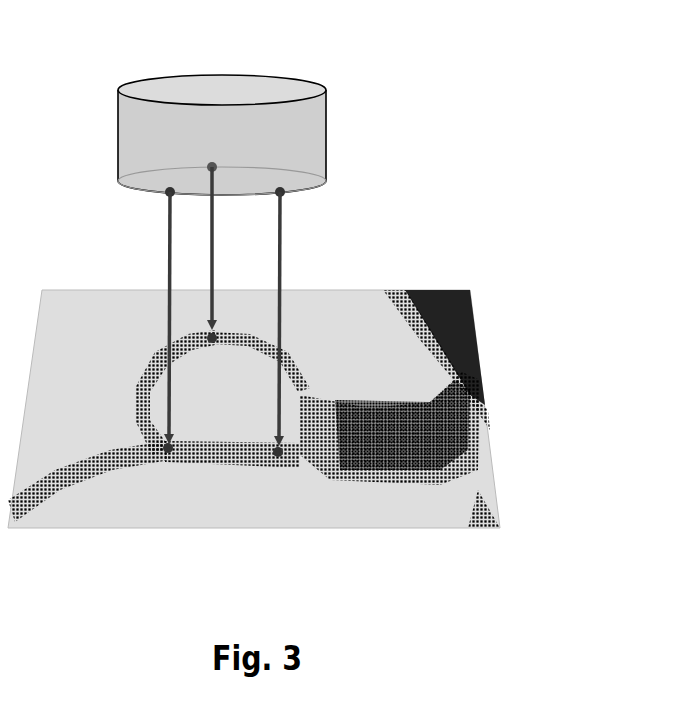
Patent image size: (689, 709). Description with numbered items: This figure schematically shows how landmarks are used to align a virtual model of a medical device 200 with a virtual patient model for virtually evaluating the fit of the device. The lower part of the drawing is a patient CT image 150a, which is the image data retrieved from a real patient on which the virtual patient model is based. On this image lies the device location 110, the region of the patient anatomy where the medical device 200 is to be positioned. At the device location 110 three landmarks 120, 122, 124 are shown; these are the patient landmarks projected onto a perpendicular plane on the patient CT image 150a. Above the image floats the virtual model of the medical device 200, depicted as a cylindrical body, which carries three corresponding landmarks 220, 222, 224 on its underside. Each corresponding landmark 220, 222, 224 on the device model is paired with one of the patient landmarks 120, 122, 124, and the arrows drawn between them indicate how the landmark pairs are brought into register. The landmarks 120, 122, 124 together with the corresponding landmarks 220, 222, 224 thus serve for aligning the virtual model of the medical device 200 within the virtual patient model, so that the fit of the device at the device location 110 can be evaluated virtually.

The medical device 200 is at (315, 137).
The corresponding landmark 220 is at (283, 195).
The corresponding landmark 222 is at (160, 193).
The corresponding landmark 224 is at (212, 167).
The device location 110 is at (131, 362).
The landmark 120 is at (283, 454).
The landmark 122 is at (168, 448).
The landmark 124 is at (212, 337).
The image data 150a is at (447, 405).